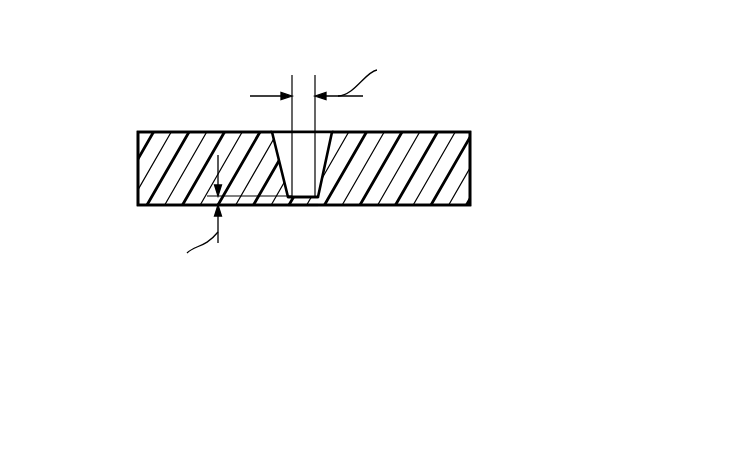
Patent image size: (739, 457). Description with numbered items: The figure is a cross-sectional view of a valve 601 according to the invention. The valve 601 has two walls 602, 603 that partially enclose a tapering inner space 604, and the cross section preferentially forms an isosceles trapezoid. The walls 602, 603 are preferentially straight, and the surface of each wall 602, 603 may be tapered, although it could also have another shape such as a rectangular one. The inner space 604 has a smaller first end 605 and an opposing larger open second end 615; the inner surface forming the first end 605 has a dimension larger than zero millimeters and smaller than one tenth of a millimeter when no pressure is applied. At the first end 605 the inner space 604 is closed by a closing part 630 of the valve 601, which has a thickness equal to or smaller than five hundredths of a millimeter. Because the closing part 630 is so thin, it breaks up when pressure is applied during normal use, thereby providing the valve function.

The valve 601 is at (519, 69).
The wall 602 is at (138, 168).
The wall 603 is at (470, 168).
The tapering inner space 604 is at (307, 160).
The first end 605 is at (284, 212).
The second end 615 is at (305, 117).
The closing part 630 is at (301, 216).